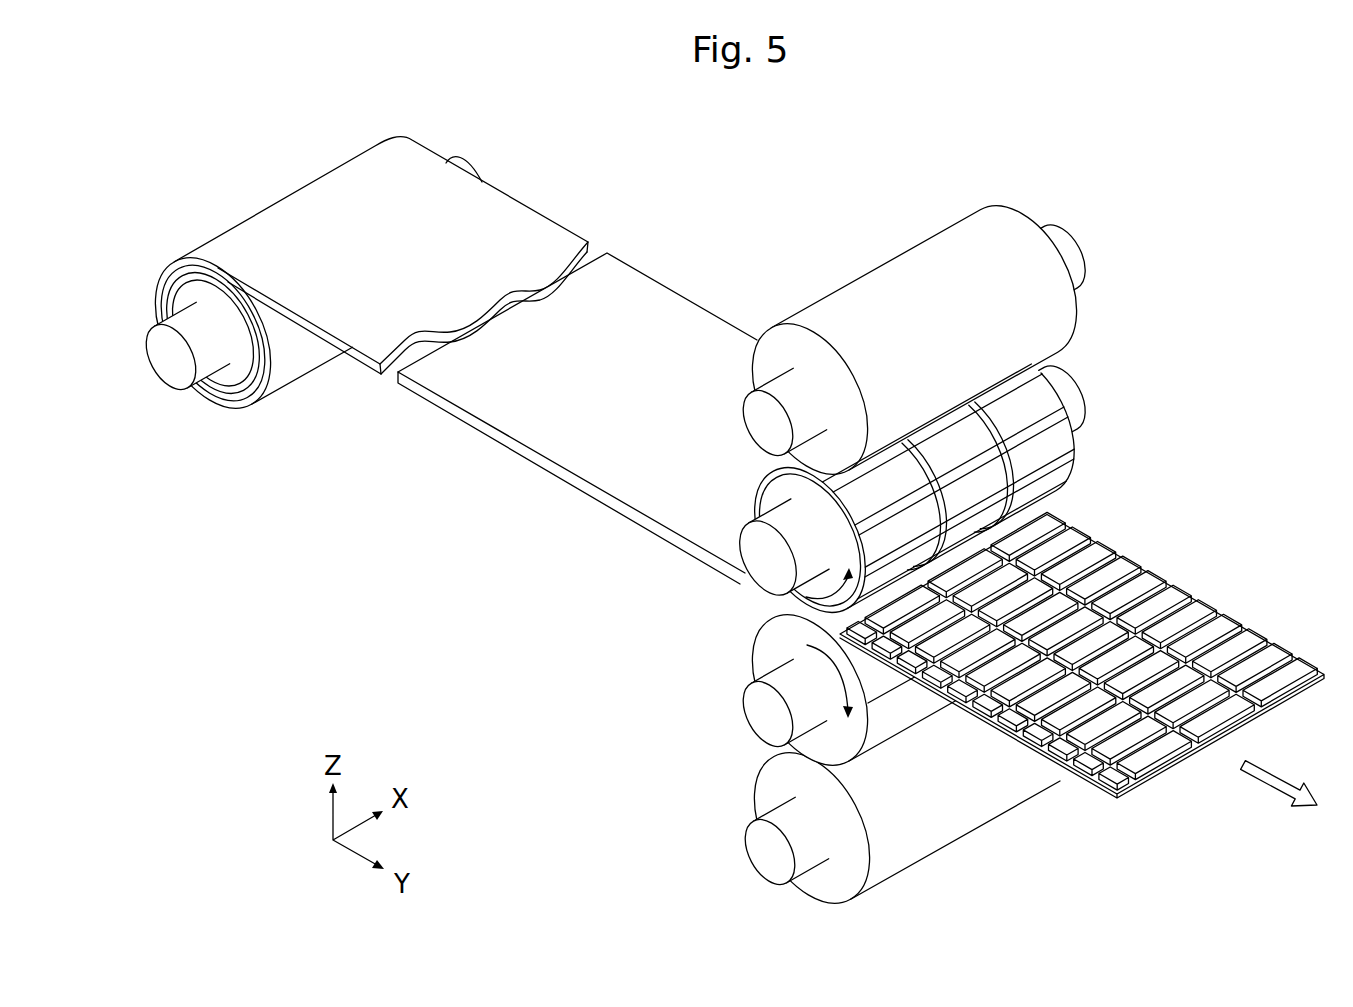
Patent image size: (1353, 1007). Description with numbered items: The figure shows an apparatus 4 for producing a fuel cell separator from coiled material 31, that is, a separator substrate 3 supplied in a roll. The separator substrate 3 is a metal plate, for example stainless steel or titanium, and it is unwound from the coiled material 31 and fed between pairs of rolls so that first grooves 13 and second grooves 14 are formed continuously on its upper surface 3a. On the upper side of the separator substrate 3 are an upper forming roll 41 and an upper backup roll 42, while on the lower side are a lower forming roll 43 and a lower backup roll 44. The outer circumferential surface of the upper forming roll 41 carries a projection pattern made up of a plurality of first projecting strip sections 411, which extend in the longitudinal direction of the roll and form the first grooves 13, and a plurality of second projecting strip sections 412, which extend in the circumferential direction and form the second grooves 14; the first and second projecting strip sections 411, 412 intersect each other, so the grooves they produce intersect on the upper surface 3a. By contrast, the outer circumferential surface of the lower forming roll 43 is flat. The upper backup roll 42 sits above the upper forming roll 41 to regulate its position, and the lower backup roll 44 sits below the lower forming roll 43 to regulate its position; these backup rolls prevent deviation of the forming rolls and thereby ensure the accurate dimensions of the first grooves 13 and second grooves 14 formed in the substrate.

The separator substrate 3 is at (465, 360).
The upper surface 3a is at (670, 350).
The apparatus for producing the fuel cell separator 4 is at (959, 547).
The upper forming roll 41 is at (959, 482).
The first projecting strip sections 411 is at (1037, 415).
The second projecting strip sections 412 is at (1063, 468).
The upper backup roll 42 is at (1025, 272).
The lower forming roll 43 is at (900, 700).
The lower backup roll 44 is at (897, 840).
The first grooves 13 is at (1202, 625).
The second grooves 14 is at (1245, 740).
The coiled material 31 is at (232, 388).